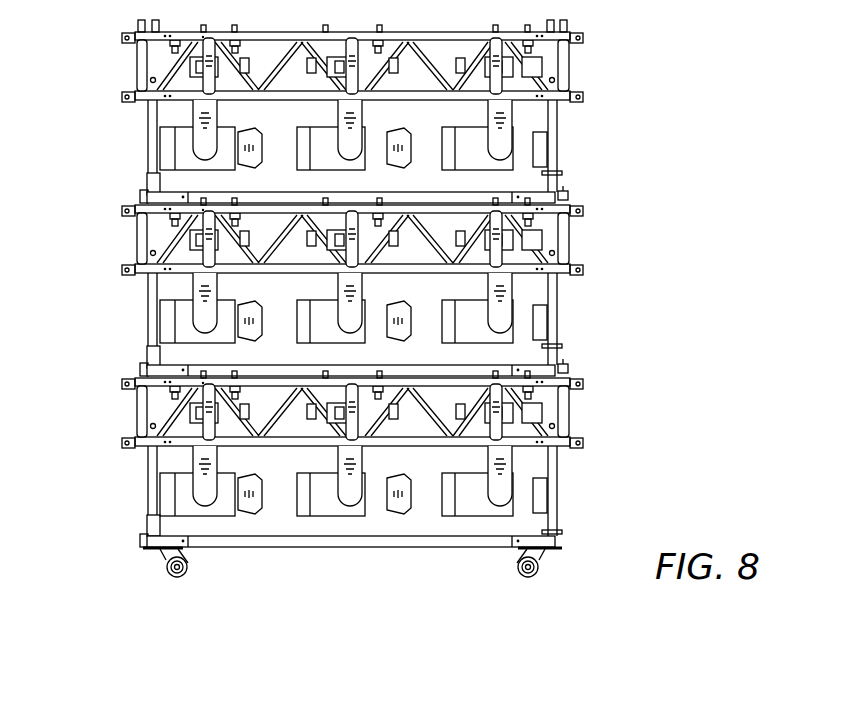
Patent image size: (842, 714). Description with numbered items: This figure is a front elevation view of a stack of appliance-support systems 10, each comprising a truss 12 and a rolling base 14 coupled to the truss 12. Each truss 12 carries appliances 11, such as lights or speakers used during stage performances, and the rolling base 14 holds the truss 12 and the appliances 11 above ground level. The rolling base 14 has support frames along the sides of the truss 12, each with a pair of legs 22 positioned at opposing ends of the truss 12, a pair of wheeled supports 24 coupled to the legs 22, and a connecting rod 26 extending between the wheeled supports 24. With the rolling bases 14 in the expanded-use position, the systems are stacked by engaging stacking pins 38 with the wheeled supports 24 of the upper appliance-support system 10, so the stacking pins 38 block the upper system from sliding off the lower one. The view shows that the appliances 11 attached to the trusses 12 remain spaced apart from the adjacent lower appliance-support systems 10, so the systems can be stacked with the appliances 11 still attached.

The appliance-support system 10 is at (83, 0).
The appliance 11 is at (406, 167).
The truss 12 is at (117, 63).
The rolling base 14 is at (129, 147).
The leg 22 is at (568, 121).
The wheeled support 24 is at (562, 169).
The connecting rod 26 is at (271, 189).
The stacking pin 38 is at (571, 195).